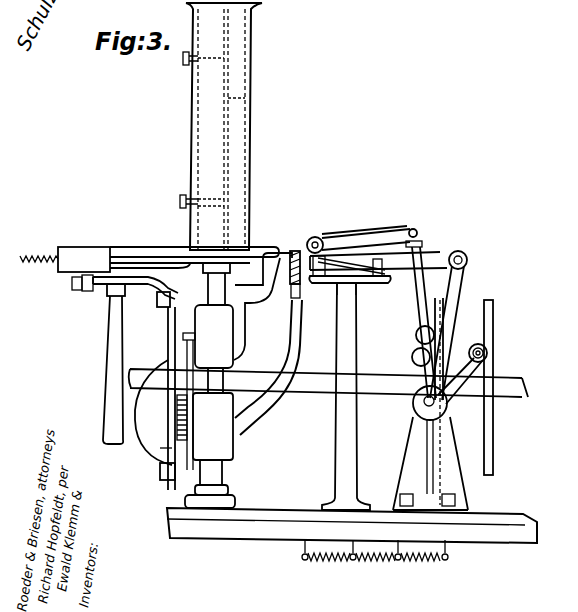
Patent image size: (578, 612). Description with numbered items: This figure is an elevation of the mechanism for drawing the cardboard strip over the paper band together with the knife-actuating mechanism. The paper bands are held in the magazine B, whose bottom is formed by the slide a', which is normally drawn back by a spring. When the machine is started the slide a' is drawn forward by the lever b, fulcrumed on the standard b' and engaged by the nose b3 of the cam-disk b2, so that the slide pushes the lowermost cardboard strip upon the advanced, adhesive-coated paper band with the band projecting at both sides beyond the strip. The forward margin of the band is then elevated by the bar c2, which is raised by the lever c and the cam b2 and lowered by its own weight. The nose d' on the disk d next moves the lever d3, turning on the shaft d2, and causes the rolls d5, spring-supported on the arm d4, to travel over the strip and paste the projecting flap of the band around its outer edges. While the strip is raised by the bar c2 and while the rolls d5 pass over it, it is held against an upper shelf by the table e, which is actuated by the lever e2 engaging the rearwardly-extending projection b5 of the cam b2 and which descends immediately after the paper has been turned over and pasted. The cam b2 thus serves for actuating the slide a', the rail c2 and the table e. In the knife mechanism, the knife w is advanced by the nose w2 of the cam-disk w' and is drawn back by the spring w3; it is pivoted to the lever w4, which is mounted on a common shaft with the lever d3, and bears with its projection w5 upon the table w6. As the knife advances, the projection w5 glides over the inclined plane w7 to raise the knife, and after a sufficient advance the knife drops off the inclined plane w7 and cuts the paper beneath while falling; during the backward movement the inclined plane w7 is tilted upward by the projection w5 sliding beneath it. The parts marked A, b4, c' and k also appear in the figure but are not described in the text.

The magazine B is at (221, 126).
The shaft A is at (523, 385).
The slide a' is at (135, 249).
The lever b is at (125, 295).
The standard b' is at (123, 364).
The cam-disk b2 is at (170, 318).
The nose b3 is at (153, 412).
The pawl b4 is at (160, 467).
The rearwardly-extending projection b5 is at (160, 448).
The lever c is at (208, 438).
The bracket c' is at (269, 240).
The bar c2 is at (298, 315).
The table e is at (268, 344).
The lever e2 is at (190, 338).
The disk d is at (457, 396).
The nose d' is at (409, 359).
The shaft d2 is at (424, 399).
The lever d3 is at (423, 253).
The arm d4 is at (367, 238).
The rolls d5 is at (315, 237).
The post k is at (346, 296).
The knife w is at (395, 317).
The cam-disk w' is at (503, 386).
The nose w2 is at (470, 400).
The spring w3 is at (370, 565).
The lever w4 is at (448, 341).
The projection w5 is at (372, 296).
The table w6 is at (318, 284).
The inclined plane w7 is at (351, 266).